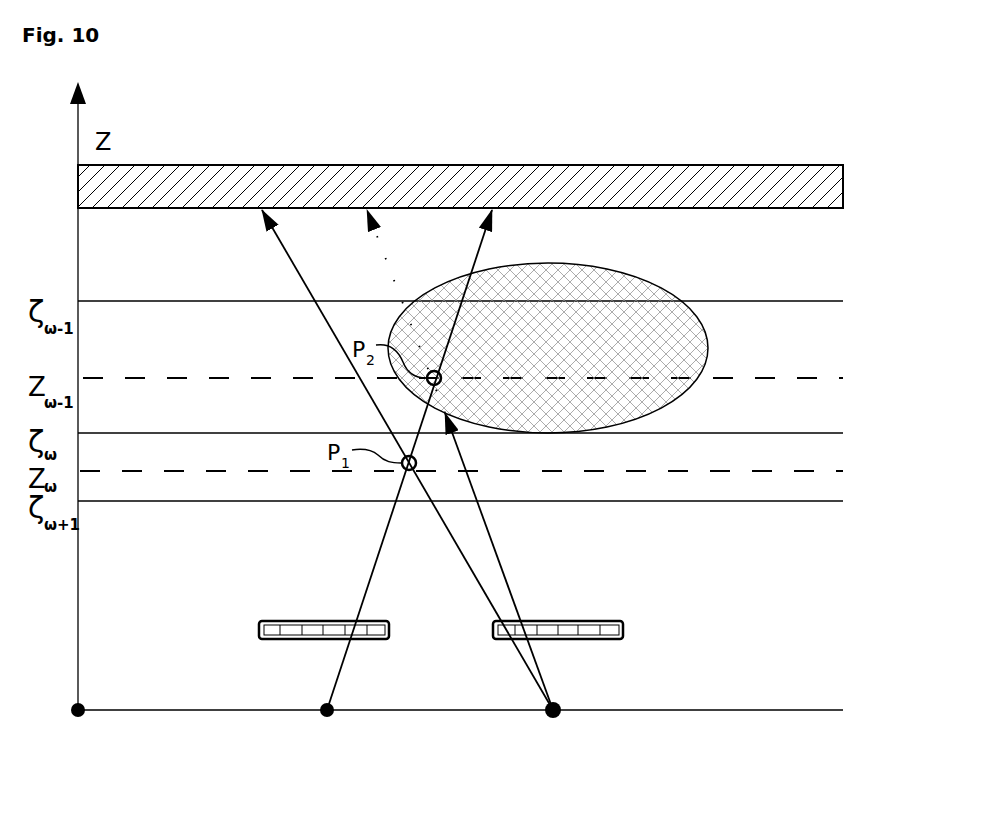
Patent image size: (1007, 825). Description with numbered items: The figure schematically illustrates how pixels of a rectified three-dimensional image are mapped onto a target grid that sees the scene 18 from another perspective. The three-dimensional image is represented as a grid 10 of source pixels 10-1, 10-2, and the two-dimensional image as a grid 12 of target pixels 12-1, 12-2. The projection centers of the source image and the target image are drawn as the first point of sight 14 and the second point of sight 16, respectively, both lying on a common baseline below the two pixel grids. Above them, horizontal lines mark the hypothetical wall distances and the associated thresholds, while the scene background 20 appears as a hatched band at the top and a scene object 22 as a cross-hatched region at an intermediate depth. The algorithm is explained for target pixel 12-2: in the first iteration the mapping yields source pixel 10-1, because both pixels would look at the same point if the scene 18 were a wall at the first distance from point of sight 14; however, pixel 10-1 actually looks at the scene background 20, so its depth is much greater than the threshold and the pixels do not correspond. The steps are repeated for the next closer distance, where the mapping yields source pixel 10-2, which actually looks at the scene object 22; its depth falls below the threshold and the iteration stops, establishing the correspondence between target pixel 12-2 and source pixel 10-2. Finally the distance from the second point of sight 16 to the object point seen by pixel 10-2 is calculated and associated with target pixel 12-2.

The grid of source pixels 10 is at (619, 640).
The source pixel 10-1 is at (497, 640).
The source pixel 10-2 is at (530, 626).
The grid of target pixels 12 is at (294, 640).
The target pixel 12-1 is at (373, 640).
The target pixel 12-2 is at (360, 626).
The first point of sight 14 is at (556, 722).
The second point of sight 16 is at (325, 718).
The scene 18 is at (760, 567).
The scene background 20 is at (630, 178).
The scene object 22 is at (675, 352).